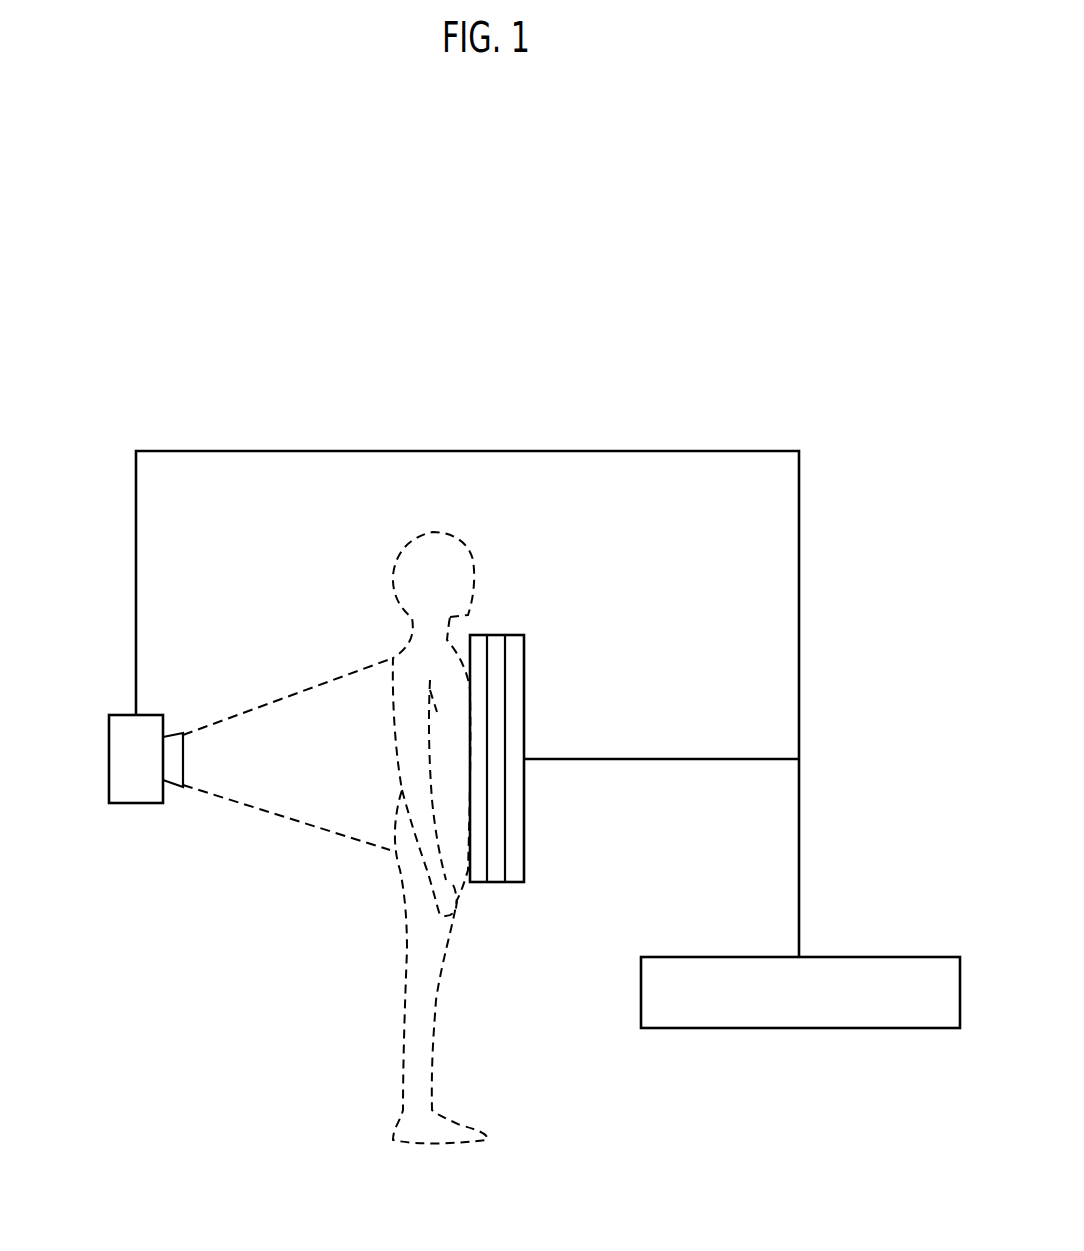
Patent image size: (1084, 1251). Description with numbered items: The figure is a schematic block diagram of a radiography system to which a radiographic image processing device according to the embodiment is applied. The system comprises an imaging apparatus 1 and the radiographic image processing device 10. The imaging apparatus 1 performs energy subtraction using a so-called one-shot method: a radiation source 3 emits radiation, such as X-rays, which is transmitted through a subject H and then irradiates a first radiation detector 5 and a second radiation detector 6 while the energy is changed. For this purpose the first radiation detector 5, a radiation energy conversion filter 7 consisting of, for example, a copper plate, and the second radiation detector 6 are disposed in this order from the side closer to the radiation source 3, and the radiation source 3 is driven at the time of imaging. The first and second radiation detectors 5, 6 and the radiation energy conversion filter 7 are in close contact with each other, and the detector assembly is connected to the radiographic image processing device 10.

The imaging apparatus 1 is at (190, 414).
The radiation source 3 is at (109, 757).
The first radiation detector 5 is at (478, 635).
The second radiation detector 6 is at (513, 635).
The radiation energy conversion filter 7 is at (495, 882).
The radiographic image processing device 10 is at (917, 957).
The subject H is at (409, 543).